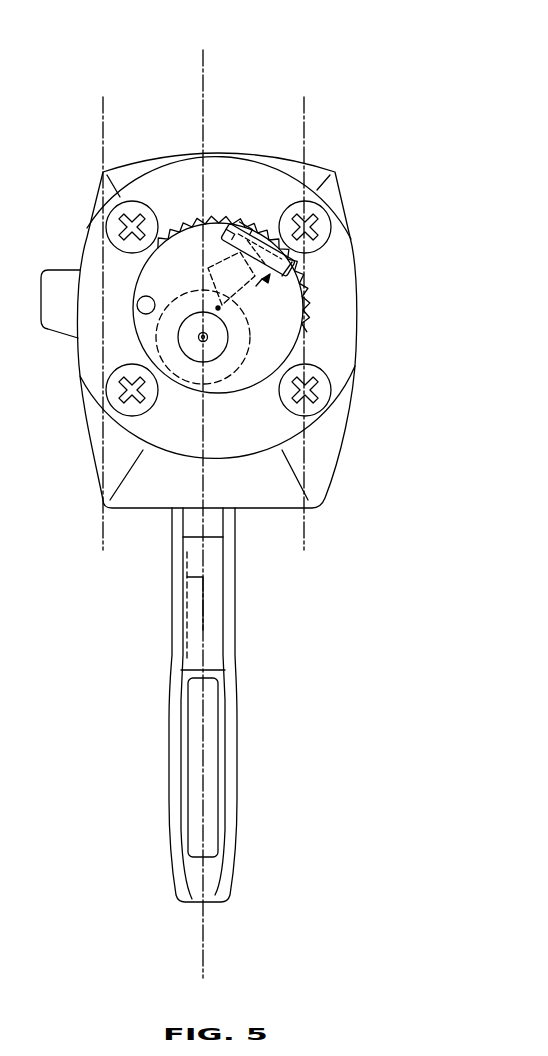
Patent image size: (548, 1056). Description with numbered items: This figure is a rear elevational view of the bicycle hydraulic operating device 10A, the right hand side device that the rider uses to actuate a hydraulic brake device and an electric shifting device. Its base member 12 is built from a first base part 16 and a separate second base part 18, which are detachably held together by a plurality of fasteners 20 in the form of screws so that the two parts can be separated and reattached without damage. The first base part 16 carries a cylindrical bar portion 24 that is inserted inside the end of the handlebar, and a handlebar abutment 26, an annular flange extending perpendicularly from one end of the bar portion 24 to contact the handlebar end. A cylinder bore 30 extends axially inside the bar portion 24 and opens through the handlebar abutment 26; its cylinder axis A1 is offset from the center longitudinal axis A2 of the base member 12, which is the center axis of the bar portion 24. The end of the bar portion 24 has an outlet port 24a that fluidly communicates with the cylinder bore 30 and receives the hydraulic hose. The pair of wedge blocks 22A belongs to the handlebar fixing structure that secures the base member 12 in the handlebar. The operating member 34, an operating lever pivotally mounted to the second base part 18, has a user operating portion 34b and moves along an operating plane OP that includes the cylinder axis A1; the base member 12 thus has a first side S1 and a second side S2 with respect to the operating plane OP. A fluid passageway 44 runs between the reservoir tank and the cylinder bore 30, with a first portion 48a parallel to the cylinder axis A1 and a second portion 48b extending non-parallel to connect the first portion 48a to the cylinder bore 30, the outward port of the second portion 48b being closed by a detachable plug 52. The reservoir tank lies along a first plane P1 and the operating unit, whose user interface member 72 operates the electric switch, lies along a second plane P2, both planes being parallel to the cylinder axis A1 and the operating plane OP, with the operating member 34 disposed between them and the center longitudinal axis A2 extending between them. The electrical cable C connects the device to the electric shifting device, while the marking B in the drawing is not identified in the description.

The bicycle hydraulic operating device 10A is at (120, 81).
The base member 12 is at (249, 330).
The first base part 16 is at (308, 432).
The second base part 18 is at (328, 487).
The fasteners 20 is at (138, 201).
The wedge blocks 22A is at (188, 220).
The bar portion 24 is at (138, 345).
The outlet port 24a is at (195, 361).
The handlebar abutment 26 is at (283, 168).
The cylinder bore 30 is at (251, 390).
The operating member 34 is at (235, 598).
The user operating portion 34b is at (239, 786).
The fluid passageway 44 is at (310, 297).
The first portion 48a is at (300, 264).
The second portion 48b is at (210, 269).
The plug 52 is at (255, 232).
The user interface member 72 is at (62, 270).
The cylinder axis A1 is at (208, 338).
The center longitudinal axis A2 is at (220, 309).
The point B is at (146, 280).
The electrical cable C is at (144, 283).
The first plane P1 is at (307, 533).
The second plane P2 is at (103, 533).
The first side S1 is at (181, 106).
The second side S2 is at (264, 106).
The operating plane OP is at (203, 958).